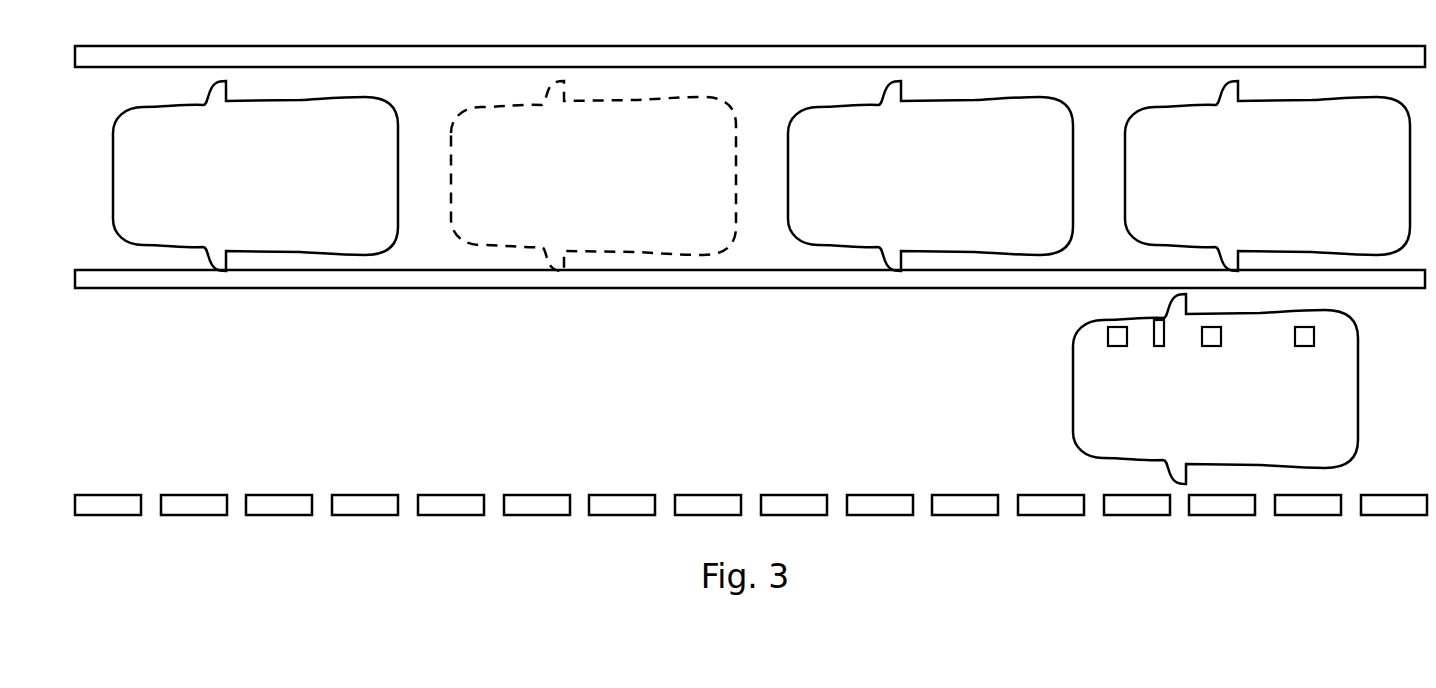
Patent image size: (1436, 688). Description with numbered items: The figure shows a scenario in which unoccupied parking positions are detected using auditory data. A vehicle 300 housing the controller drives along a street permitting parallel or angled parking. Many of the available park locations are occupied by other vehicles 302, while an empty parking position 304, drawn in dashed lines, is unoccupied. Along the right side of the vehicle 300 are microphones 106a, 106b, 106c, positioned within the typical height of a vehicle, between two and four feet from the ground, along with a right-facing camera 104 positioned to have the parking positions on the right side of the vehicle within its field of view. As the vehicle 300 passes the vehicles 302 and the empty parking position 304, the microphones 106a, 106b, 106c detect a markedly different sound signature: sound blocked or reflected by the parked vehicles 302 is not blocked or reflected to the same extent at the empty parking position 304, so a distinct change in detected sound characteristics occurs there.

The vehicle 300 is at (1283, 457).
The other vehicles 302 is at (308, 147).
The empty parking position 304 is at (688, 157).
The right-facing camera 104 is at (1163, 347).
The microphone 106a is at (1125, 347).
The microphone 106b is at (1220, 347).
The microphone 106c is at (1313, 347).